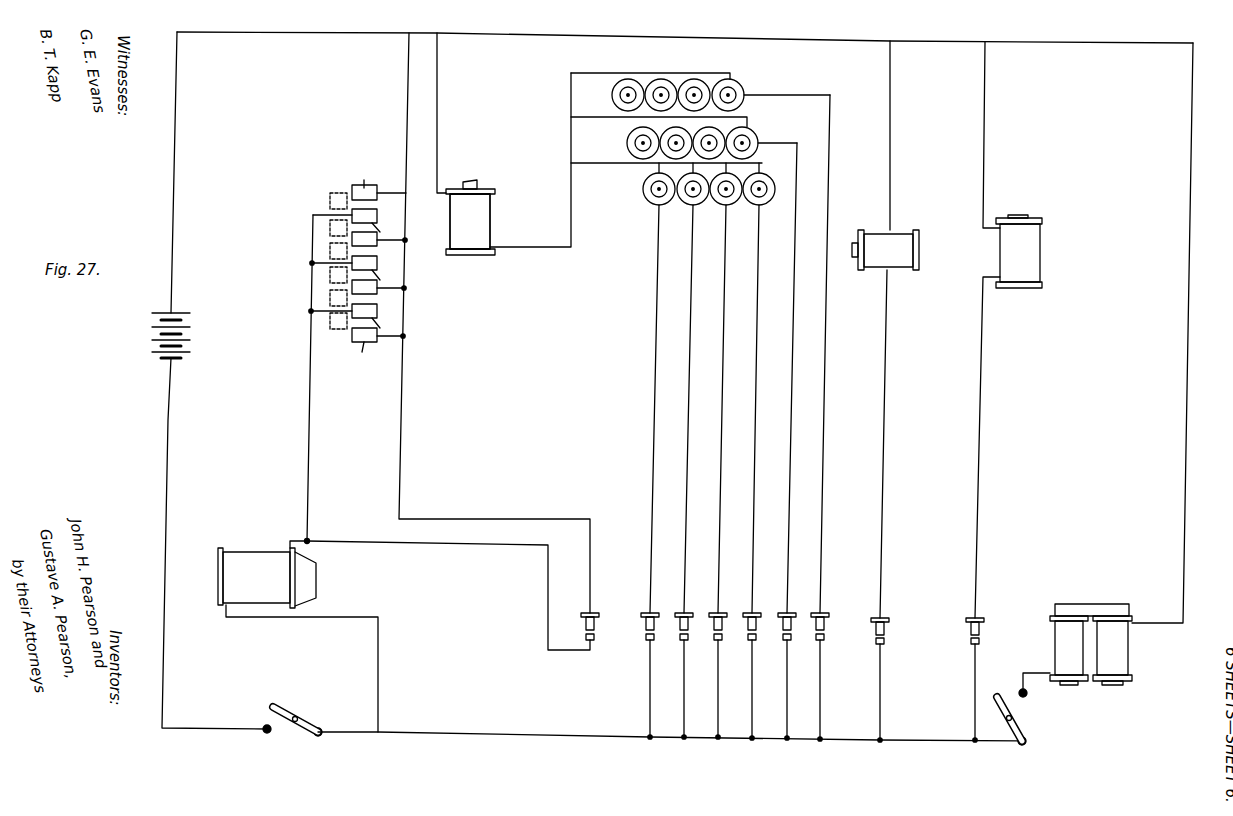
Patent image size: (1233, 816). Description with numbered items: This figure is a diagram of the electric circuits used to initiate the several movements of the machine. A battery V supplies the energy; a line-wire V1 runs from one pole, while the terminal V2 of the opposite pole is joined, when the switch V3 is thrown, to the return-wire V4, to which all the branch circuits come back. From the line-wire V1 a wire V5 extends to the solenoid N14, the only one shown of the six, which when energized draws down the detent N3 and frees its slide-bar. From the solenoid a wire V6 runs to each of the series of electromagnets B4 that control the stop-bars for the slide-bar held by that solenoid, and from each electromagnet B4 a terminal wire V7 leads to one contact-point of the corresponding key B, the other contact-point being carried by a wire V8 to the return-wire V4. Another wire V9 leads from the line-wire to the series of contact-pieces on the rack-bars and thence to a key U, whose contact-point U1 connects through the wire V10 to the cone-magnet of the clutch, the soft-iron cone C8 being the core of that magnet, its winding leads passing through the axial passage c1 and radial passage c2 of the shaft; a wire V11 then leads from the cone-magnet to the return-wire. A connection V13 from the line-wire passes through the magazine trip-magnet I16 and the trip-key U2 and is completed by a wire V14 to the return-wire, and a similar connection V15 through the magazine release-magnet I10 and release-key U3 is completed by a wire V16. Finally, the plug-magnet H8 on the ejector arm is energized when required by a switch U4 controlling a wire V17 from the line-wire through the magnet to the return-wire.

The battery V is at (180, 335).
The line-wire V1 is at (682, 172).
The terminal of the opposite pole V2 is at (200, 543).
The switch V3 is at (292, 728).
The return-wire V4 is at (665, 737).
The wire to solenoid V5 is at (447, 113).
The wire from solenoid to electromagnets V6 is at (541, 160).
The terminal wire V7 is at (736, 354).
The wire to return-wire V8 is at (730, 690).
The wire to contact-pieces and key V9 is at (484, 323).
The wire to cone-magnet V10 is at (448, 595).
The wire from cone-magnet V11 is at (302, 668).
The connection to trip-magnet V13 is at (903, 135).
The wire completing trip circuit V14 is at (893, 506).
The connection to release-magnet V15 is at (999, 135).
The wire completing release circuit V16 is at (972, 509).
The wire to plug-magnet V17 is at (1117, 368).
The axial passage c1 is at (356, 352).
The radial passage c2 is at (364, 261).
The cone C8 is at (267, 574).
The detent N3 is at (479, 181).
The solenoid N14 is at (490, 208).
The electromagnet B4 is at (673, 136).
The key B is at (735, 616).
The key U is at (598, 614).
The contact-point U1 is at (601, 634).
The trip-key U2 is at (891, 629).
The release-key U3 is at (985, 631).
The switch U4 is at (1023, 717).
The trip-magnet I16 is at (885, 250).
The release-magnet I10 is at (1019, 251).
The plug-magnet H8 is at (1102, 644).